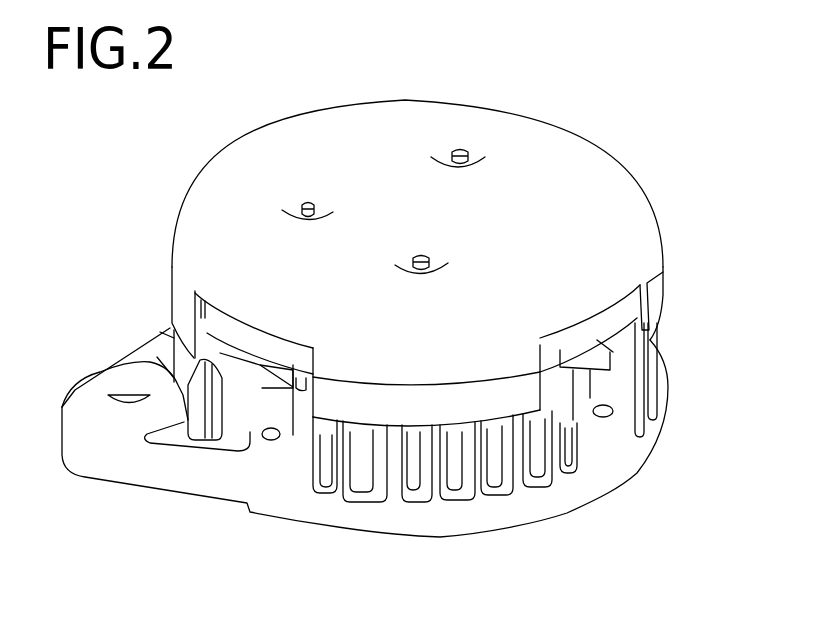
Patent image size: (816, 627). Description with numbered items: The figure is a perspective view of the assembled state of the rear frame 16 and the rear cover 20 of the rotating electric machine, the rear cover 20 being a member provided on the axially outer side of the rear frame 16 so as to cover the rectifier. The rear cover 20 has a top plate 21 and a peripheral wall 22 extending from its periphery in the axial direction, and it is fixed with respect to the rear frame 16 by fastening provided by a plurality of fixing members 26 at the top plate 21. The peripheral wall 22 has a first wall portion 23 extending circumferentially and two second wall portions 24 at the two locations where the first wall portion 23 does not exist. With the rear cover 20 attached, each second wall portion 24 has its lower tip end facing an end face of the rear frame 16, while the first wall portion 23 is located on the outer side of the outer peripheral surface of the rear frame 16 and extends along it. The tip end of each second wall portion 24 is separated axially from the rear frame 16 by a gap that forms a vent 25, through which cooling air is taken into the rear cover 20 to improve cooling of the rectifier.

The rear frame 16 is at (636, 469).
The rear cover 20 is at (571, 128).
The top plate 21 is at (618, 184).
The peripheral wall 22 is at (604, 573).
The first wall portion 23 is at (503, 400).
The second wall portion 24 is at (560, 345).
The vent 25 is at (603, 357).
The fixing member 26 is at (460, 152).